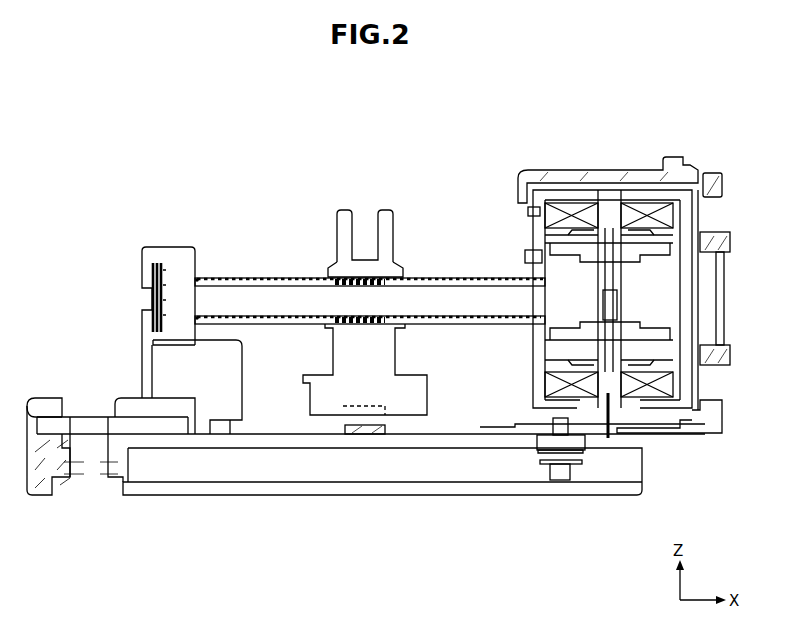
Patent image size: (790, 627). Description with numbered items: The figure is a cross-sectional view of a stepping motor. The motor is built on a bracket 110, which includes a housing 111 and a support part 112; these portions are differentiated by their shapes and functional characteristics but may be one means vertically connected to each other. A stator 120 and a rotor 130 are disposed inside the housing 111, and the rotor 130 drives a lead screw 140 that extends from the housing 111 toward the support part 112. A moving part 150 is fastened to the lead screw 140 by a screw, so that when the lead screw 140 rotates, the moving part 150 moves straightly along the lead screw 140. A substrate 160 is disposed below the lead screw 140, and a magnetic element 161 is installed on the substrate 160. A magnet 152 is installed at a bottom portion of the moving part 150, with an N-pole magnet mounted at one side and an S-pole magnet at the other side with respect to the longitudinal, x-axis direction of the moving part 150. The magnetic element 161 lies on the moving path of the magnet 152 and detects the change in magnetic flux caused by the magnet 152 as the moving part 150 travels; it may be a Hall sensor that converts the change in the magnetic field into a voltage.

The bracket 110 is at (625, 287).
The housing 111 is at (635, 175).
The support part 112 is at (175, 247).
The stator 120 is at (676, 212).
The rotor 130 is at (656, 250).
The lead screw 140 is at (262, 268).
The moving part 150 is at (338, 200).
The magnet 152 is at (392, 406).
The substrate 160 is at (238, 450).
The magnetic element 161 is at (360, 433).